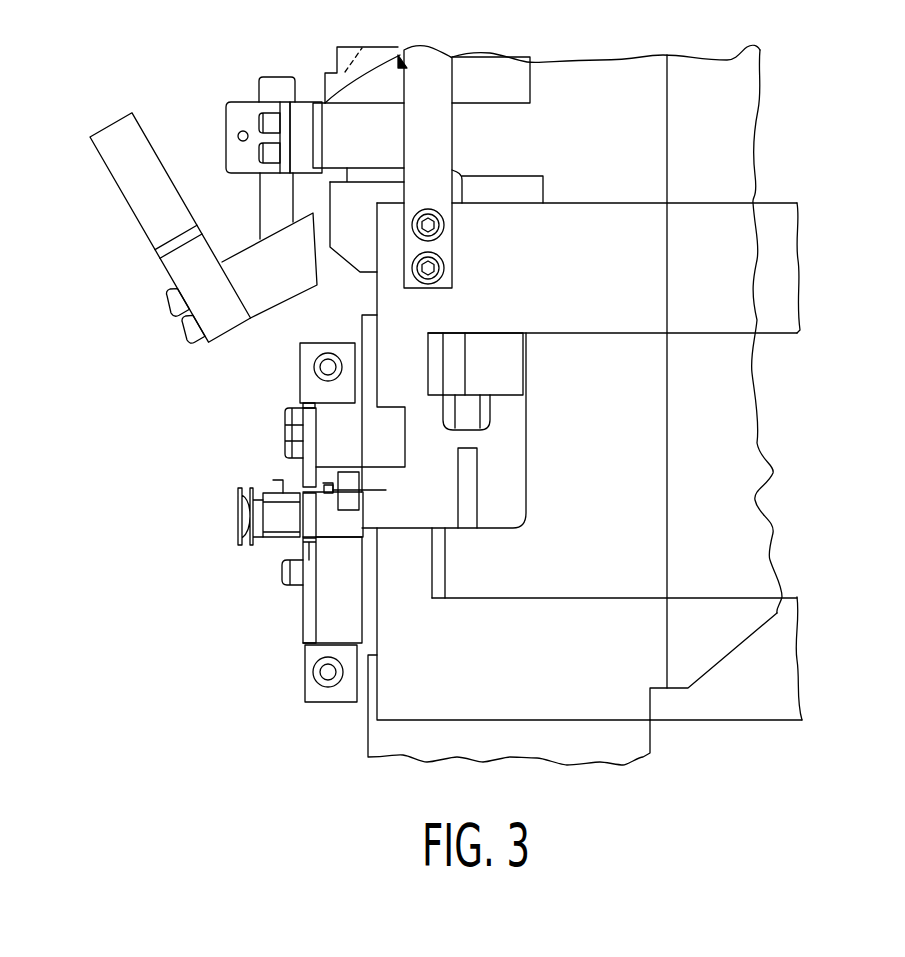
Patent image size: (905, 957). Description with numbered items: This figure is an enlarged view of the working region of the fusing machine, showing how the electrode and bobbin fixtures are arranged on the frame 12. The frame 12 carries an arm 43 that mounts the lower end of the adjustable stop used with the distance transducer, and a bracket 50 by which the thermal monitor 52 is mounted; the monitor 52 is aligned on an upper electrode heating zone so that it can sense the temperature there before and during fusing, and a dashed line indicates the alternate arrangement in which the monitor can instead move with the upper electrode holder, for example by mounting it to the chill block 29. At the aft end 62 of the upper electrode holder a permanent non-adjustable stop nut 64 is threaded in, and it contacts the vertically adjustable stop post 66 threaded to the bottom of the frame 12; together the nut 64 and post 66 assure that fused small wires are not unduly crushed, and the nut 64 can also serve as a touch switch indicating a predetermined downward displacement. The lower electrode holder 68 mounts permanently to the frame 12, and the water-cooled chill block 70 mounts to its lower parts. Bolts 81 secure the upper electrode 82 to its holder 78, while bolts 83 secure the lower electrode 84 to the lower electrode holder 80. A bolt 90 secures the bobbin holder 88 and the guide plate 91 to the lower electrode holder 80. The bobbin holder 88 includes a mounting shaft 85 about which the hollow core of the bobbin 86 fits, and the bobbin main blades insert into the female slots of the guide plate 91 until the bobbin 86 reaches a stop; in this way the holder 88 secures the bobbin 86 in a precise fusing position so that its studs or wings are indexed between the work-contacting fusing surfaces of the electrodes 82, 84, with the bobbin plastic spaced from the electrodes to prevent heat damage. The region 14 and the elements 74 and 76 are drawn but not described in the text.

The frame 12 is at (626, 114).
The housing 14 is at (717, 153).
The chill block 29 is at (307, 355).
The arm 43 is at (438, 128).
The bracket 50 is at (235, 118).
The thermal monitor 52 is at (204, 262).
The aft end 62 is at (503, 377).
The stop nut 64 is at (467, 420).
The stop post 66 is at (470, 490).
The lower electrode holder 68 is at (593, 642).
The chill block 70 is at (314, 370).
The lower bracket 74 is at (312, 688).
The fastener 76 is at (328, 680).
The holder 78 is at (395, 447).
The lower electrode holder 80 is at (347, 568).
The bolts 81 is at (297, 427).
The upper electrode 82 is at (297, 472).
The bolts 83 is at (282, 580).
The lower electrode 84 is at (313, 580).
The mounting shaft 85 is at (260, 523).
The bobbin 86 is at (237, 525).
The bobbin holder 88 is at (347, 523).
The bolt 90 is at (360, 457).
The guide plate 91 is at (331, 485).